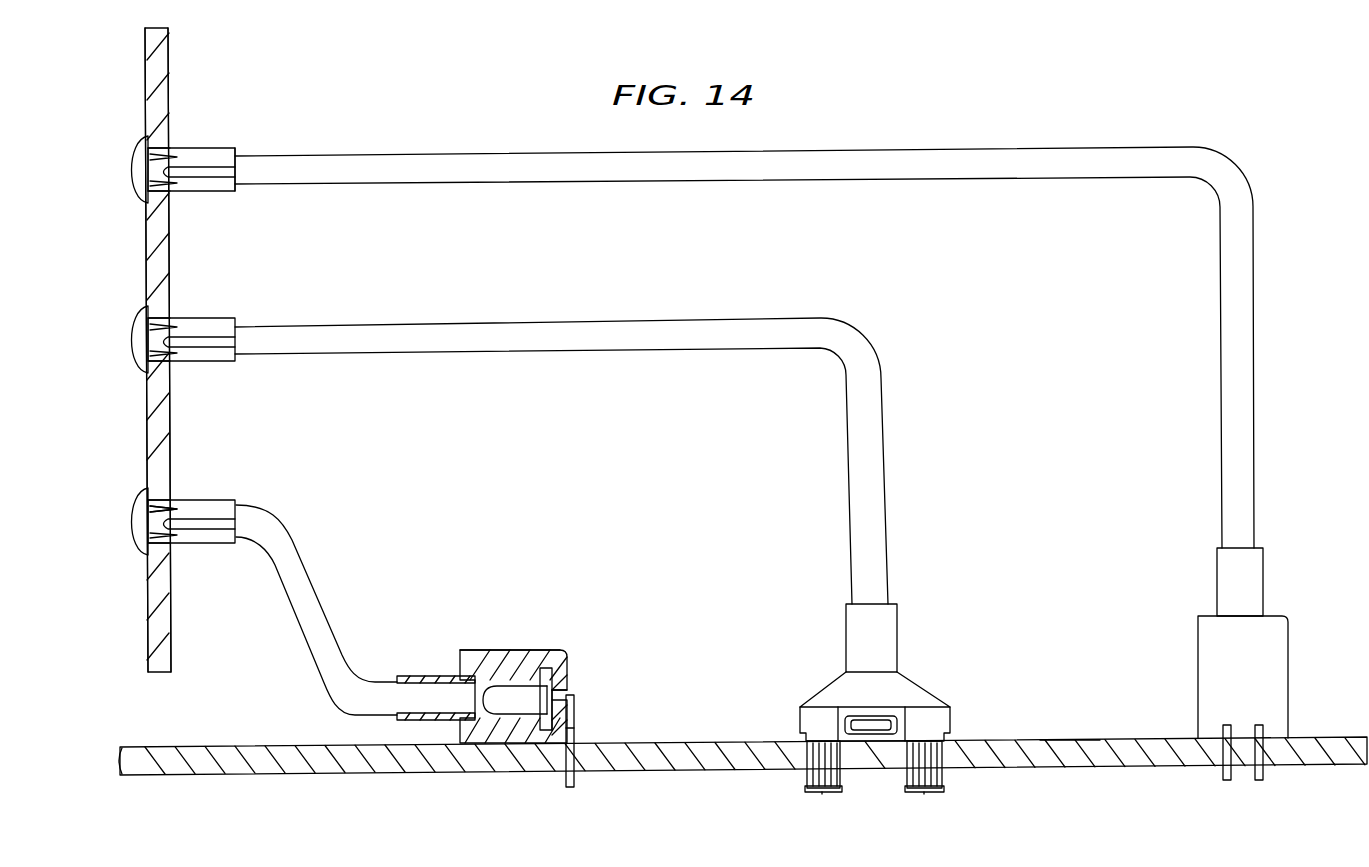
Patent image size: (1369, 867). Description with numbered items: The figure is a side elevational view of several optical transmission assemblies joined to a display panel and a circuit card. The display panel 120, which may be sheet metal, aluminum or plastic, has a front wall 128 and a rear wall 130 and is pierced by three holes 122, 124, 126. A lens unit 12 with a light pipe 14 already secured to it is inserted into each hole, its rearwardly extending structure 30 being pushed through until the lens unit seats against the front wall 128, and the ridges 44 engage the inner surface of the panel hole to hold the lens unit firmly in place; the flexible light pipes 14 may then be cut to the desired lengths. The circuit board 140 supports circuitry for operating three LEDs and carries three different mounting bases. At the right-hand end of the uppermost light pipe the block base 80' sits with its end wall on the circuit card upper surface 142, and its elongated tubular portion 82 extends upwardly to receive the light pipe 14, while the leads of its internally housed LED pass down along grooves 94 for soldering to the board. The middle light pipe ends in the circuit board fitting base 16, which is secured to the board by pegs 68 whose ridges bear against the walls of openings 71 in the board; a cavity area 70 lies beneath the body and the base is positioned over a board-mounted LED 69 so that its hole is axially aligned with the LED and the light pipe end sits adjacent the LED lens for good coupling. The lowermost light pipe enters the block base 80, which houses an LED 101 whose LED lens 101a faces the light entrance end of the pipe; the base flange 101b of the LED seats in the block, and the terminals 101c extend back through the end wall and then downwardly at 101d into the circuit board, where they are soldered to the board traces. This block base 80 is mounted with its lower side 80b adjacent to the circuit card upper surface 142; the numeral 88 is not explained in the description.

The lens unit 12 is at (213, 151).
The light pipe 14 is at (876, 150).
The fitting base 16 is at (888, 643).
The rearwardly extending structure 30 is at (237, 157).
The ridge 44 is at (178, 501).
The peg 68 is at (806, 778).
The LED 69 is at (900, 735).
The cavity area 70 is at (838, 725).
The opening 71 is at (908, 795).
The block base 80 is at (513, 659).
The block base 80' is at (1212, 677).
The lower side 80b is at (470, 747).
The elongated tubular portion 82 is at (420, 676).
The body top wall 88 is at (488, 650).
The groove 94 is at (573, 663).
The LED 101 is at (532, 670).
The LED lens 101a is at (507, 705).
The base flange 101b is at (549, 732).
The terminal 101c is at (567, 690).
The downward terminal portion 101d is at (578, 730).
The display panel 120 is at (172, 57).
The hole 122 is at (172, 192).
The hole 124 is at (190, 354).
The hole 126 is at (172, 544).
The front wall 128 is at (147, 112).
The rear wall 130 is at (162, 110).
The circuit board 140 is at (1135, 766).
The circuit card upper surface 142 is at (1068, 745).